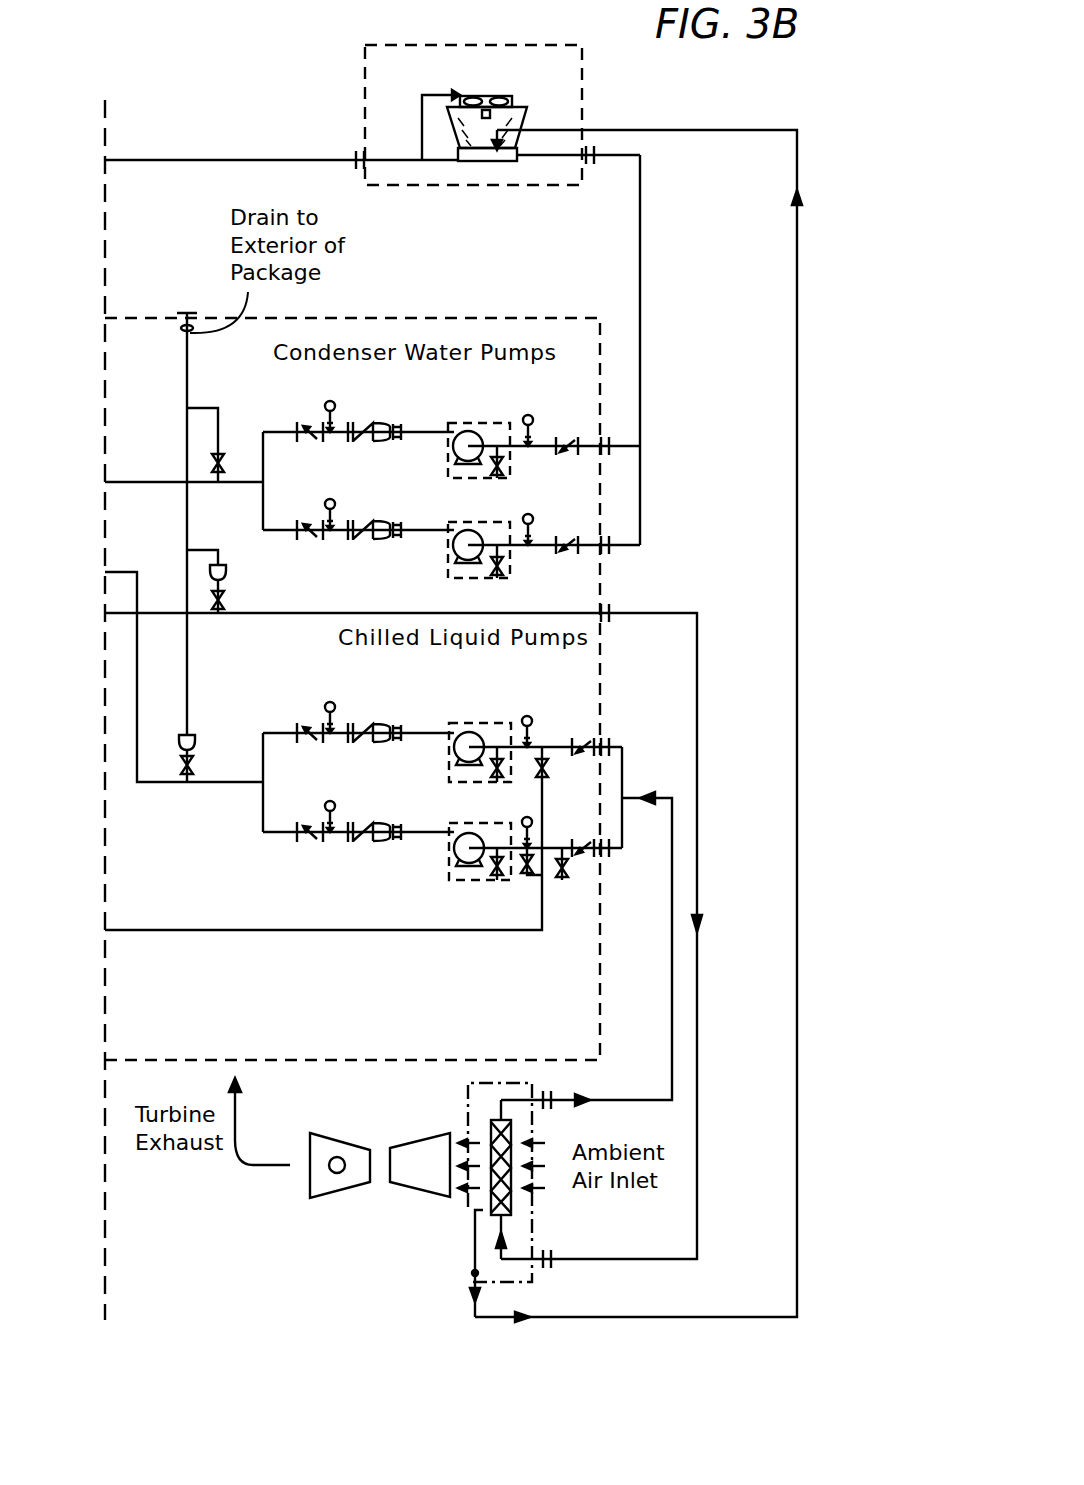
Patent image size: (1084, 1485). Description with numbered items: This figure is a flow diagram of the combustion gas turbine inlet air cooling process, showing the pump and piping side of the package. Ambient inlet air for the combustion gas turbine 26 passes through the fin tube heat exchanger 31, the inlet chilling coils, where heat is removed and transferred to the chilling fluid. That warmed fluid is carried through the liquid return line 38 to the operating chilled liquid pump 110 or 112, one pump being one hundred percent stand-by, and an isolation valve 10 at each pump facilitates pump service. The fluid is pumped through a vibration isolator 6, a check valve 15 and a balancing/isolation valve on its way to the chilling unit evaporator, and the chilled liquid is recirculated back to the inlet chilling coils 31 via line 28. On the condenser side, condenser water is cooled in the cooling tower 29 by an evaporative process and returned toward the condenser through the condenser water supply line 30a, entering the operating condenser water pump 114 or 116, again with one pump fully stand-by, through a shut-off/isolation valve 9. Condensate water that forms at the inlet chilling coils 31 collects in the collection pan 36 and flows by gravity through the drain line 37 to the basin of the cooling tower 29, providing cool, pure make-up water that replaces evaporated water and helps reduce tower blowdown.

The cooling tower 29 is at (512, 113).
The drain line 37 is at (797, 147).
The condenser water supply line 30a is at (640, 241).
The condenser water pump 114 is at (477, 423).
The condenser water pump 116 is at (478, 522).
The shut-off/isolation valve 9 is at (560, 445).
The line 28 is at (697, 641).
The check valve 15 is at (333, 733).
The vibration isolator 6 is at (398, 733).
The chilled liquid pump 110 is at (484, 733).
The chilled liquid pump 112 is at (478, 868).
The isolation valve 10 is at (590, 742).
The liquid return line 38 is at (672, 920).
The fin tube heat exchanger 31 is at (505, 1130).
The collection pan 36 is at (510, 1215).
The combustion gas turbine 26 is at (420, 1158).